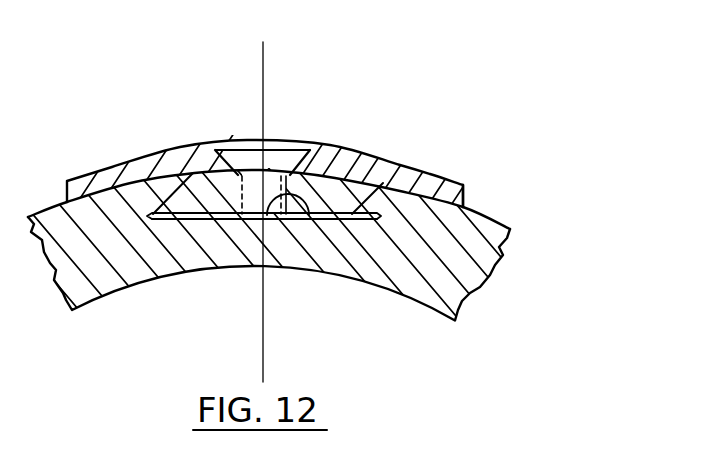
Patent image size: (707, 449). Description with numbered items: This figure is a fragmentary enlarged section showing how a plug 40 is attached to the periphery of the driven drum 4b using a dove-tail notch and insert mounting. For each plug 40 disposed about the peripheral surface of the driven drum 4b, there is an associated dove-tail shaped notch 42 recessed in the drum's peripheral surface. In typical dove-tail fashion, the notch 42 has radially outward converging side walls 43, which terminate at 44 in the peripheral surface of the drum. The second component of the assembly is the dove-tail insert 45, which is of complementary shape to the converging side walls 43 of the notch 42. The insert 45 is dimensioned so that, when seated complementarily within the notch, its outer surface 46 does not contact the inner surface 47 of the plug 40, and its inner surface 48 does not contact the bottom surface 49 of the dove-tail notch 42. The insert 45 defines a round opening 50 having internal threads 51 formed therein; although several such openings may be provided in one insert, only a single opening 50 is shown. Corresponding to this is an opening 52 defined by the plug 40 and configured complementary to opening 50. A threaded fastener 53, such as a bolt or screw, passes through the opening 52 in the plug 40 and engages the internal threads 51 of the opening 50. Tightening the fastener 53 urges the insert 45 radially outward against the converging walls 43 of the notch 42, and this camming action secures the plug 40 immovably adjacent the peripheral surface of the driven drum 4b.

The driven drum 4b is at (98, 283).
The plug 40 is at (112, 168).
The dove-tail shaped notch 42 is at (160, 207).
The converging side walls 43 is at (385, 173).
The termination of side walls 44 is at (377, 174).
The dove-tail insert 45 is at (347, 192).
The outer surface 46 is at (310, 177).
The inner surface 47 is at (198, 170).
The inner surface 48 is at (185, 220).
The bottom surface 49 is at (242, 217).
The round opening 50 is at (310, 177).
The internal threads 51 is at (268, 218).
The opening 52 is at (216, 150).
The threaded fastener 53 is at (277, 156).